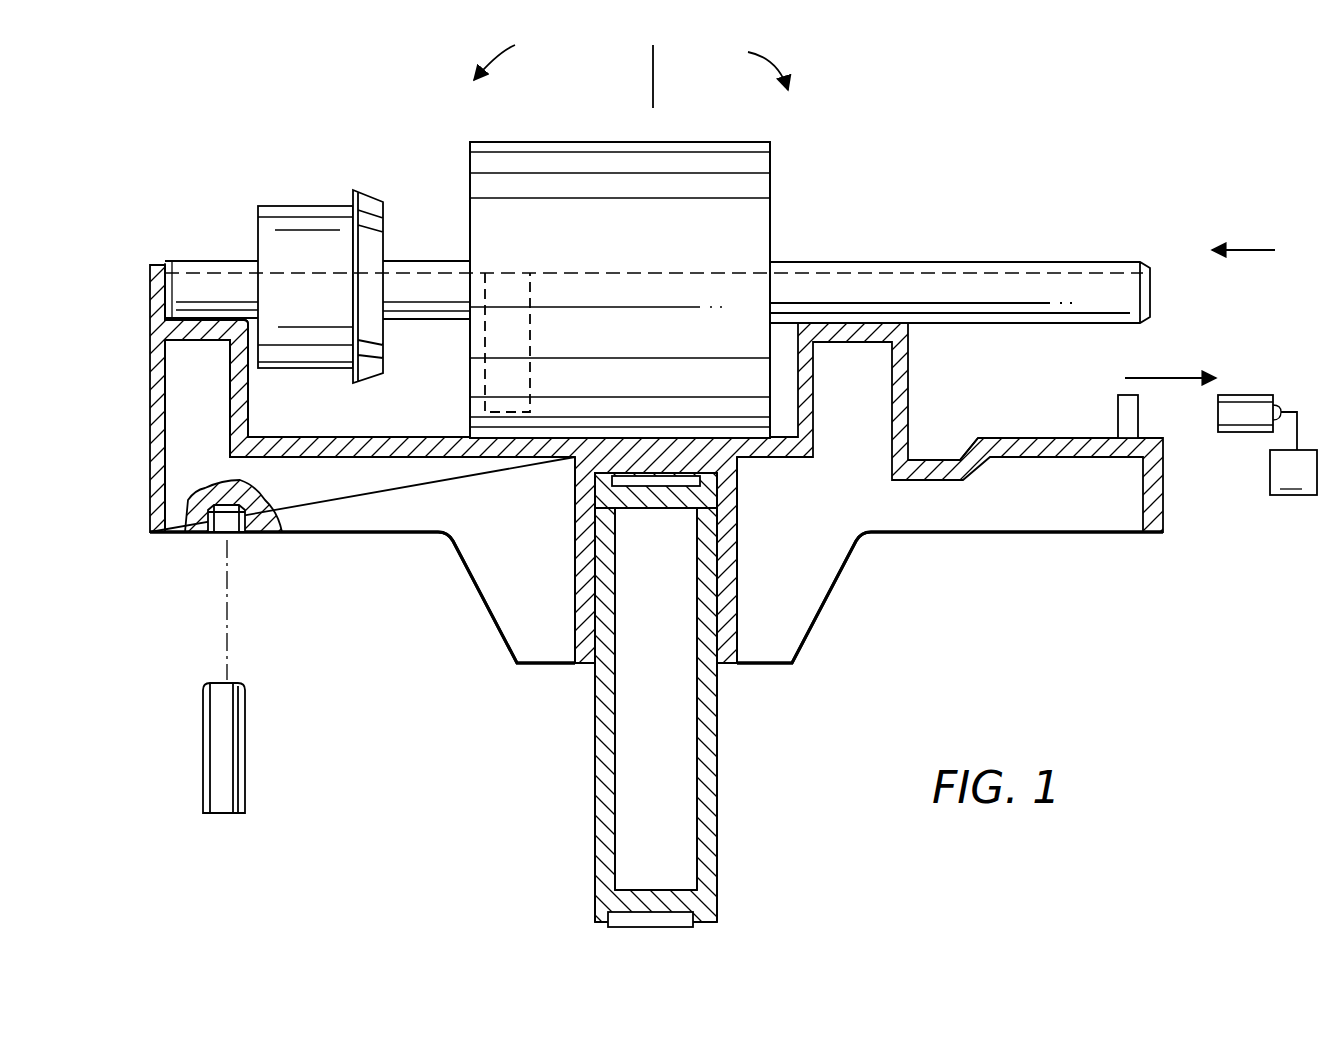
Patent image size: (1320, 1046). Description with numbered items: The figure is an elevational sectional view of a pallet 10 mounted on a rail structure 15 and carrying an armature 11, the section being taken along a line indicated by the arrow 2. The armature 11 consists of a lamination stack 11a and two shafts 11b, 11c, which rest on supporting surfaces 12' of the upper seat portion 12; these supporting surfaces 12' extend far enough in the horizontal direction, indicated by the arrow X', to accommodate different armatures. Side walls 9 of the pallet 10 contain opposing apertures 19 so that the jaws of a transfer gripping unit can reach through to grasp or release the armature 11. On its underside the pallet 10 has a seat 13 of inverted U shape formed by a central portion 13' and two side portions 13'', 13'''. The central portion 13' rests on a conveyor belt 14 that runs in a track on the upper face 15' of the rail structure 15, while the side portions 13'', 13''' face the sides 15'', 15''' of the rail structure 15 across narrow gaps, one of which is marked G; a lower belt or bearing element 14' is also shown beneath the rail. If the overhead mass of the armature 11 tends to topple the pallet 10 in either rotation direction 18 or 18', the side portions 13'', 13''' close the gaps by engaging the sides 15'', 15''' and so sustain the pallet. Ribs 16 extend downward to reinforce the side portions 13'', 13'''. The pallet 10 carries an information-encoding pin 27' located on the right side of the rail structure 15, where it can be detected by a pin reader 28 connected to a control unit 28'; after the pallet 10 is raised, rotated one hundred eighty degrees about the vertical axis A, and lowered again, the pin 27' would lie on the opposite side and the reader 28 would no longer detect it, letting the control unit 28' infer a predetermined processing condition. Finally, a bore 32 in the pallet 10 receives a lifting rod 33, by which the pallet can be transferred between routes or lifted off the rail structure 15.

The pallet 10 is at (906, 574).
The armature 11 is at (632, 128).
The lamination stack 11a is at (752, 226).
The shaft 11b is at (232, 262).
The shaft 11c is at (968, 290).
The side walls 9 is at (676, 272).
The apertures 19 is at (488, 283).
The vertical axis A is at (655, 60).
The direction of rotation 18 is at (797, 81).
The direction of rotation 18' is at (513, 78).
The section line 2 is at (1245, 248).
The seat portion 12 is at (362, 398).
The supporting surfaces 12' is at (566, 427).
The seat 13 is at (716, 560).
The central portion 13' is at (767, 560).
The portion 13'' is at (561, 649).
The portion 13''' is at (752, 653).
The conveyor belt 14 is at (620, 532).
The lower bearing 14' is at (695, 904).
The rail structure 15 is at (622, 697).
The upper face 15' is at (656, 531).
The side 15'' is at (577, 715).
The side 15''' is at (748, 715).
The ribs 16 is at (478, 576).
The gap G is at (942, 450).
The pin 27' is at (1105, 396).
The displacement direction X' is at (1170, 394).
The pin reader 28 is at (1257, 393).
The control unit 28' is at (1293, 472).
The bore 32 is at (222, 536).
The lifting rod 33 is at (220, 780).